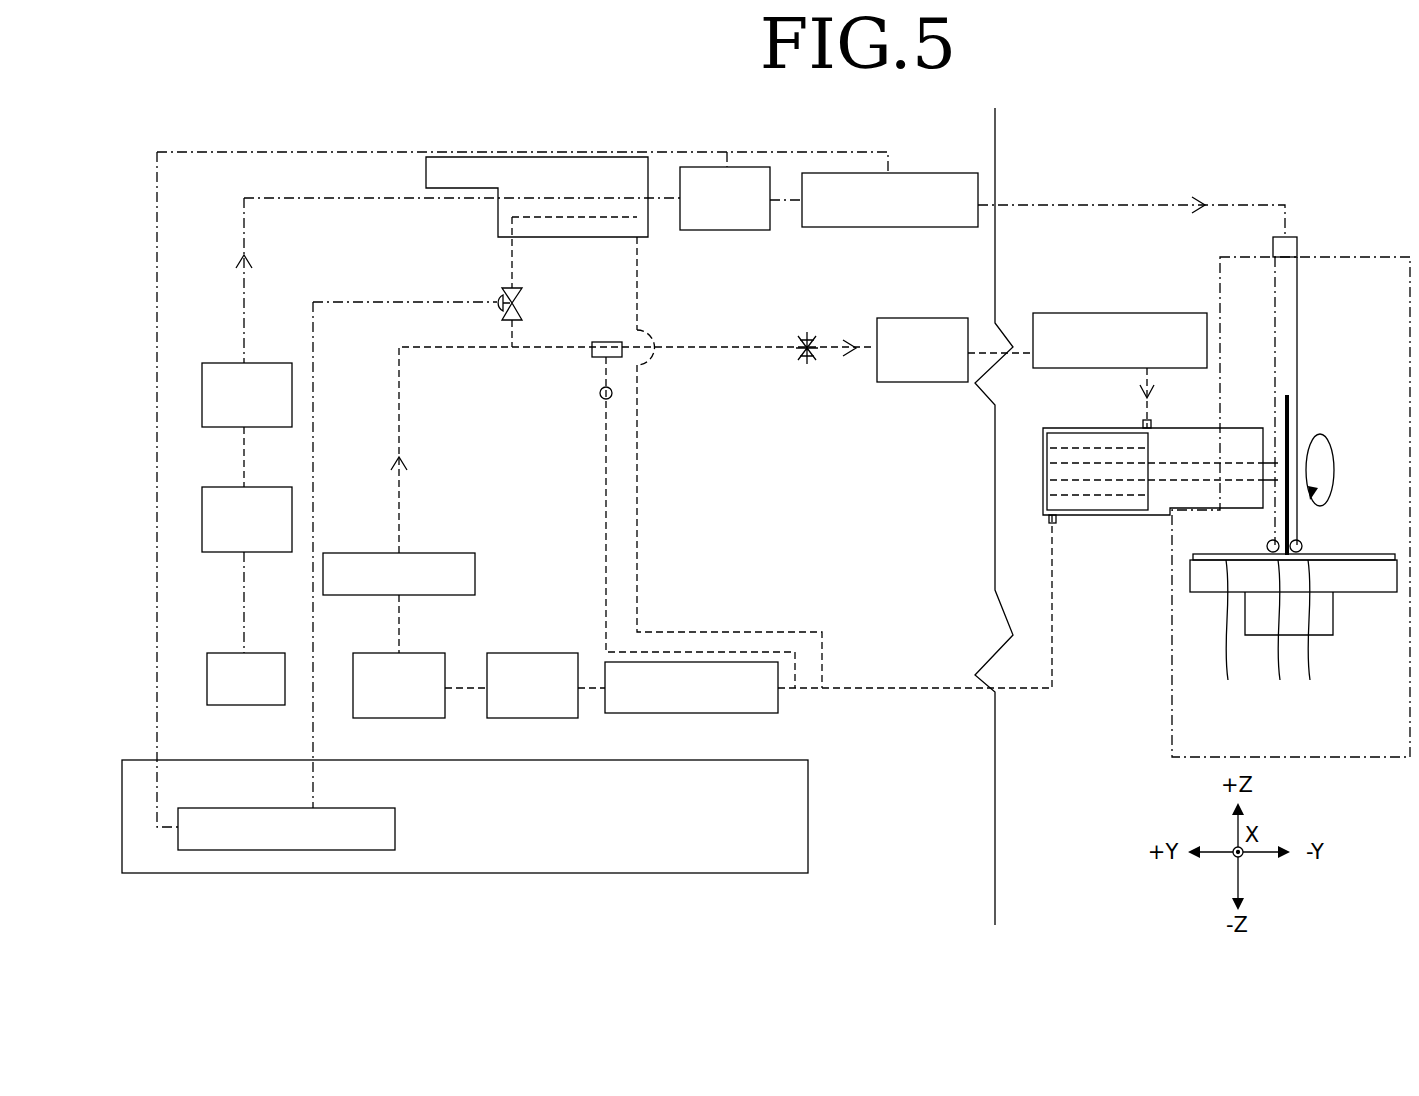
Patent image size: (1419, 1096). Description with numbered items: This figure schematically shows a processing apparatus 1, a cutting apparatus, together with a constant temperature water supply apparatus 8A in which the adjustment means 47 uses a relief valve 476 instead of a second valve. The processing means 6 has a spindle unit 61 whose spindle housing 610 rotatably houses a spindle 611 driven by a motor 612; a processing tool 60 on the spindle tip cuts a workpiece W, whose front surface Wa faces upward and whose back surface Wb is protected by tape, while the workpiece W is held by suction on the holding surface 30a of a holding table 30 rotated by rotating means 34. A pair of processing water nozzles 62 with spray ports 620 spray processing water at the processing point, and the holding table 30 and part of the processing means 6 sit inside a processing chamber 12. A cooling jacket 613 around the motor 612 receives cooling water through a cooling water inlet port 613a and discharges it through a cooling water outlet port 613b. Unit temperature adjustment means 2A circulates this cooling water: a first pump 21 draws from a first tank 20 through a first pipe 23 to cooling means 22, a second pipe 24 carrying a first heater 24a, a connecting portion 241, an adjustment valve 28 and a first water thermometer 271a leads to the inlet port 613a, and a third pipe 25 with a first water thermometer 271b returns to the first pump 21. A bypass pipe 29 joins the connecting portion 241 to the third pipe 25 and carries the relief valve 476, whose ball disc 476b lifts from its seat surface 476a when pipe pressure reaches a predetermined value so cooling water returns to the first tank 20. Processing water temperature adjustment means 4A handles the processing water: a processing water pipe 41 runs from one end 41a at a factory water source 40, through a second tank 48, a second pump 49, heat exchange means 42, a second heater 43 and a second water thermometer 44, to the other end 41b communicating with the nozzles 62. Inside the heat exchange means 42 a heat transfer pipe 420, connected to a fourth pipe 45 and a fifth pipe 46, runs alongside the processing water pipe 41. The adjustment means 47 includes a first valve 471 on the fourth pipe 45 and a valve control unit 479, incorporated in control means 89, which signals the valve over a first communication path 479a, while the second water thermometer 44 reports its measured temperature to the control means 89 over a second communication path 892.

The processing apparatus 1 is at (1330, 196).
The processing water temperature adjustment means 4A is at (372, 190).
The second communication path 892 is at (578, 152).
The processing water pipe 41 is at (1070, 205).
The one end 41a is at (242, 640).
The other end 41b is at (1290, 222).
The heat exchange means 42 is at (648, 210).
The heat transfer pipe 420 is at (583, 218).
The second heater 43 is at (755, 230).
The second water thermometer 44 is at (905, 227).
The fourth pipe 45 is at (510, 265).
The adjustment means 47 is at (462, 284).
The first valve 471 is at (490, 305).
The second pump 49 is at (237, 363).
The second tank 48 is at (258, 552).
The water source 40 is at (215, 705).
The valve control unit 479 is at (395, 830).
The first communication path 479a is at (313, 465).
The unit temperature adjustment means 2A is at (869, 720).
The constant temperature water supply apparatus 8A is at (842, 833).
The control means 89 is at (540, 873).
The second pipe 24 is at (699, 350).
The first heater 24a is at (895, 318).
The connecting portion 241 is at (600, 340).
The adjustment valve 28 is at (807, 358).
The bypass pipe 29 is at (606, 512).
The fifth pipe 46 is at (637, 540).
The relief valve 476 is at (577, 382).
The seat surface 476a is at (612, 392).
The ball disc 476b is at (600, 395).
The cooling means 22 is at (475, 577).
The first pipe 23 is at (399, 617).
The first pump 21 is at (445, 705).
The first tank 20 is at (578, 705).
The first water thermometer 271a is at (1065, 313).
The first water thermometer 271b is at (778, 700).
The third pipe 25 is at (1030, 690).
The processing means 6 is at (1237, 386).
The processing tool 60 is at (1292, 405).
The spindle 611 is at (1300, 440).
The processing water nozzles 62 is at (1302, 537).
The spindle unit 61 is at (1150, 530).
The spindle housing 610 is at (1195, 440).
The cooling jacket 613 is at (1065, 440).
The cooling water inlet port 613a is at (1140, 420).
The cooling water outlet port 613b is at (1058, 522).
The motor 612 is at (1120, 497).
The front surface Wa is at (1248, 548).
The back surface Wb is at (1380, 585).
The workpiece W is at (1230, 710).
The holding table 30 is at (1205, 585).
The holding surface 30a is at (1330, 555).
The spray ports 620 is at (1308, 620).
The rotating means 34 is at (1325, 635).
The processing chamber 12 is at (1343, 757).